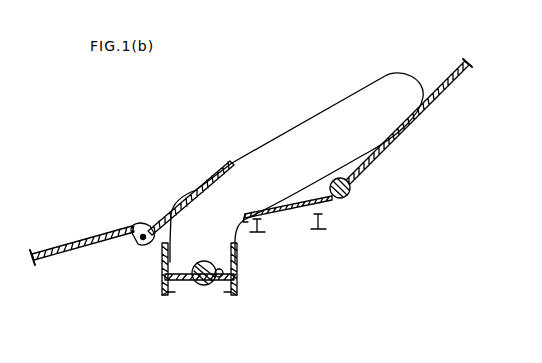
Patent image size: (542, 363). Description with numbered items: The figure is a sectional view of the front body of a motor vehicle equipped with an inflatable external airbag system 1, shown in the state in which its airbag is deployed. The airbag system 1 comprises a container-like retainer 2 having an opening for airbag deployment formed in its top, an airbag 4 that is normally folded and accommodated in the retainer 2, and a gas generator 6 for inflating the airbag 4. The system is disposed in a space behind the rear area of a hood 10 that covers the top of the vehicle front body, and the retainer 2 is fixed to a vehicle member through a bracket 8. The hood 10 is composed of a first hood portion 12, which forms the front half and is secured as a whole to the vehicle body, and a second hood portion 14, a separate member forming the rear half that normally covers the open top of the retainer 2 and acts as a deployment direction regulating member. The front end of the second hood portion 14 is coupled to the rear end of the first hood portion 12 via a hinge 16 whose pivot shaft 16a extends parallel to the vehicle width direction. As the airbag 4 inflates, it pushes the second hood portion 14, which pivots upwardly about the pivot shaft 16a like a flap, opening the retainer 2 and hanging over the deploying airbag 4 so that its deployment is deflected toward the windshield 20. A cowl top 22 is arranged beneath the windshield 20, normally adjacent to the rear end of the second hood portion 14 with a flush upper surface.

The inflatable external airbag system 1 is at (247, 266).
The retainer 2 is at (243, 248).
The airbag 4 is at (349, 83).
The gas generator 6 is at (200, 288).
The bracket 8 is at (164, 293).
The hood 10 is at (117, 226).
The first hood portion 12 is at (74, 252).
The second hood portion 14 is at (184, 192).
The hinge 16 is at (127, 245).
The pivot shaft 16a is at (137, 247).
The windshield 20 is at (456, 83).
The cowl top 22 is at (298, 216).